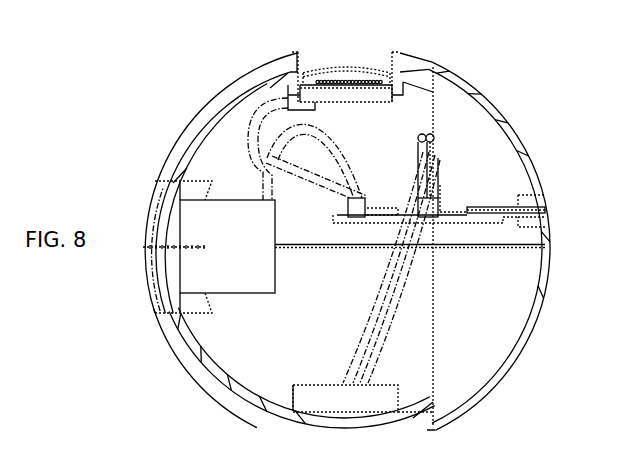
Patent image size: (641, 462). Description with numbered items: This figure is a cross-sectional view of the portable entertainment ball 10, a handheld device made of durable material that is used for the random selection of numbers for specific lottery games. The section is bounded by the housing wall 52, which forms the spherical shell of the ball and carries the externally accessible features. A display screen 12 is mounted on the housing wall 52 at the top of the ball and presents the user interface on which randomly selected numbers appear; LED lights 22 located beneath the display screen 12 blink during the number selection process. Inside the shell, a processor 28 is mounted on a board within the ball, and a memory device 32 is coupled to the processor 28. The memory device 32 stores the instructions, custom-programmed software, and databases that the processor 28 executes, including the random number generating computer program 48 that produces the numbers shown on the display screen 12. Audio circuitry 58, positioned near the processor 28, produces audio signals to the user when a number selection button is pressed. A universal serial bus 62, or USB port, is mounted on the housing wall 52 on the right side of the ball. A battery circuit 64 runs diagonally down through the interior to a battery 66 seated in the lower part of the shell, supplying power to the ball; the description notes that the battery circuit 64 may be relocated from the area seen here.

The portable entertainment ball 10 is at (472, 83).
The display screen 12 is at (350, 65).
The LED lights 22 is at (315, 80).
The processor 28 is at (470, 224).
The memory device 32 is at (443, 215).
The random number generating computer program 48 is at (260, 263).
The housing wall 52 is at (190, 113).
The audio circuitry 58 is at (377, 208).
The universal serial bus 62 is at (547, 210).
The battery circuit 64 is at (365, 338).
The battery 66 is at (303, 393).